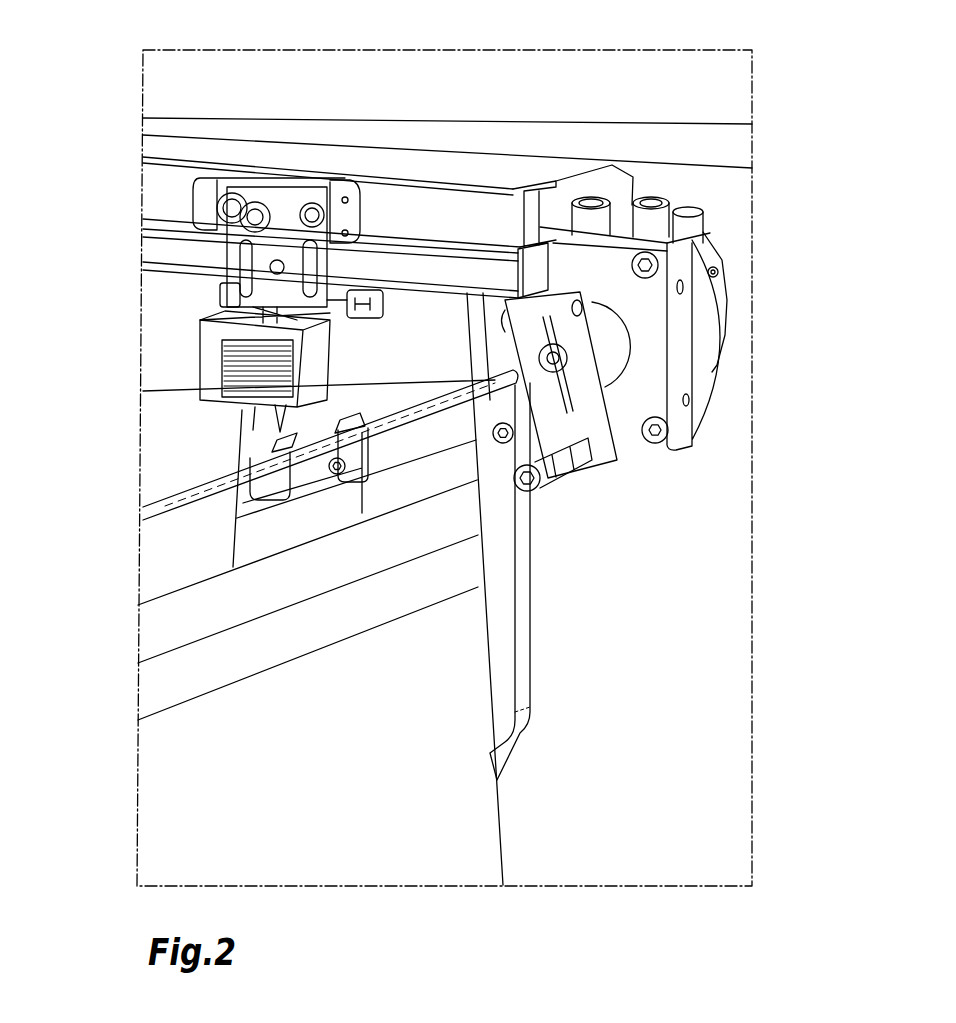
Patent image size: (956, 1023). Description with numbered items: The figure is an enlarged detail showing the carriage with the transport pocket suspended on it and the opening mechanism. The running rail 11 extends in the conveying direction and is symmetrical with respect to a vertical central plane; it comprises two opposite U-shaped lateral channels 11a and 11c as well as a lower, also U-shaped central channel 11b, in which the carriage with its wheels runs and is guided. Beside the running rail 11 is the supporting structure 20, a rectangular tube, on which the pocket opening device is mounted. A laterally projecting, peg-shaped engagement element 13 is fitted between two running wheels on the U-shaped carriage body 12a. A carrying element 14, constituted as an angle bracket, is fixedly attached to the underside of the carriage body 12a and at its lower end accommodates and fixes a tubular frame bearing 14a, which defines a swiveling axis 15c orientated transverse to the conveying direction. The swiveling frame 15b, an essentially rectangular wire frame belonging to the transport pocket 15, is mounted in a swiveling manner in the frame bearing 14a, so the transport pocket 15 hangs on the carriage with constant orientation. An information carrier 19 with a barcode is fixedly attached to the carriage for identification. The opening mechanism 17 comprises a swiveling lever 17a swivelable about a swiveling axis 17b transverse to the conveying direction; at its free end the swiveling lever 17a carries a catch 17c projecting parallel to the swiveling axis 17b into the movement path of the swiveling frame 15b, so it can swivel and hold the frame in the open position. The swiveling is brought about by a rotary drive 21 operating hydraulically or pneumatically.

The running rail 11 is at (121, 260).
The lateral channel 11a is at (368, 207).
The central channel 11b is at (533, 275).
The lateral channel 11c is at (542, 208).
The carriage body 12a is at (273, 247).
The engagement element 13 is at (257, 207).
The carrying element 14 is at (257, 437).
The frame bearing 14a is at (273, 478).
The transport pocket 15 is at (337, 780).
The swiveling frame 15b is at (518, 670).
The swiveling axis 15c is at (139, 526).
The opening mechanism 17 is at (657, 345).
The swiveling lever 17a is at (575, 425).
The swiveling axis 17b is at (553, 358).
The catch 17c is at (548, 480).
The information carrier 19 is at (192, 371).
The supporting structure 20 is at (735, 147).
The rotary drive 21 is at (700, 367).